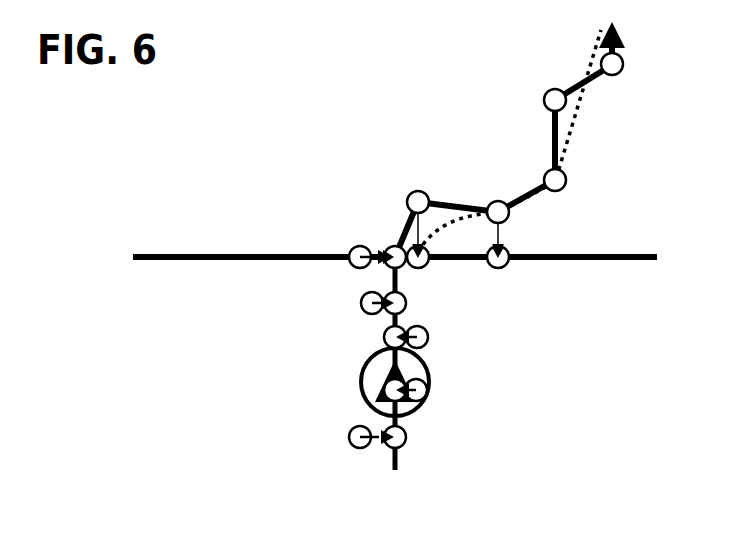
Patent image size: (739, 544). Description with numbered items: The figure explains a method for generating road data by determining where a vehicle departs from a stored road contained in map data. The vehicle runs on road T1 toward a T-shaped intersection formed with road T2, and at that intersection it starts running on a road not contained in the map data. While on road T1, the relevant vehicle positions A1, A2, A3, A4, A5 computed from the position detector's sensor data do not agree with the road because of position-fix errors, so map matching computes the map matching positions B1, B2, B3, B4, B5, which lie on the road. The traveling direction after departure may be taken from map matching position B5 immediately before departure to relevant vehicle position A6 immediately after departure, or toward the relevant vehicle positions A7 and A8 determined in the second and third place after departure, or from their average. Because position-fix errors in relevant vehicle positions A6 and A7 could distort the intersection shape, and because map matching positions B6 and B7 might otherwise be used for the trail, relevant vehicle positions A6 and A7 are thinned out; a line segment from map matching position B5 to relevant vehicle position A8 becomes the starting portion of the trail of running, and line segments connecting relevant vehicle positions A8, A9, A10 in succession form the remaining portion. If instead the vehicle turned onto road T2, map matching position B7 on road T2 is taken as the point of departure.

The relevant vehicle position A1 is at (349, 440).
The relevant vehicle position A2 is at (432, 394).
The relevant vehicle position A3 is at (432, 340).
The relevant vehicle position A4 is at (358, 306).
The relevant vehicle position A5 is at (358, 266).
The relevant vehicle position A6 is at (419, 189).
The relevant vehicle position A7 is at (500, 198).
The relevant vehicle position A8 is at (570, 184).
The relevant vehicle position A9 is at (540, 105).
The relevant vehicle position A10 is at (621, 81).
The map matching position B1 is at (408, 440).
The map matching position B2 is at (371, 394).
The map matching position B3 is at (383, 340).
The map matching position B4 is at (408, 306).
The map matching position B5 is at (390, 246).
The map matching position B6 is at (432, 268).
The map matching position B7 is at (507, 273).
The road T1 is at (396, 458).
The road T2 is at (623, 260).